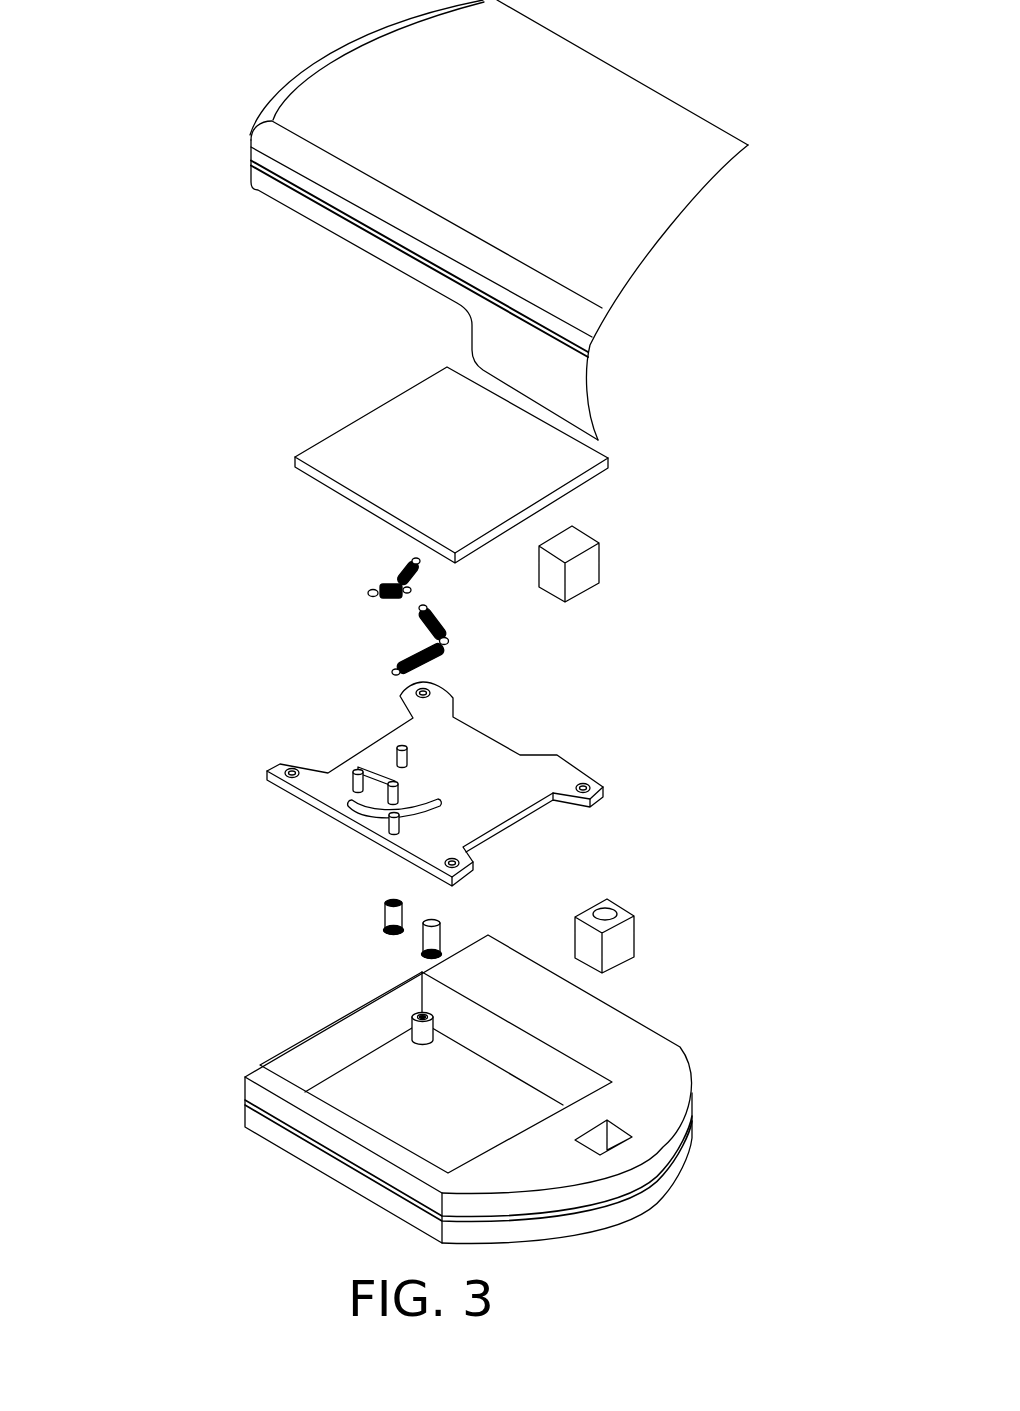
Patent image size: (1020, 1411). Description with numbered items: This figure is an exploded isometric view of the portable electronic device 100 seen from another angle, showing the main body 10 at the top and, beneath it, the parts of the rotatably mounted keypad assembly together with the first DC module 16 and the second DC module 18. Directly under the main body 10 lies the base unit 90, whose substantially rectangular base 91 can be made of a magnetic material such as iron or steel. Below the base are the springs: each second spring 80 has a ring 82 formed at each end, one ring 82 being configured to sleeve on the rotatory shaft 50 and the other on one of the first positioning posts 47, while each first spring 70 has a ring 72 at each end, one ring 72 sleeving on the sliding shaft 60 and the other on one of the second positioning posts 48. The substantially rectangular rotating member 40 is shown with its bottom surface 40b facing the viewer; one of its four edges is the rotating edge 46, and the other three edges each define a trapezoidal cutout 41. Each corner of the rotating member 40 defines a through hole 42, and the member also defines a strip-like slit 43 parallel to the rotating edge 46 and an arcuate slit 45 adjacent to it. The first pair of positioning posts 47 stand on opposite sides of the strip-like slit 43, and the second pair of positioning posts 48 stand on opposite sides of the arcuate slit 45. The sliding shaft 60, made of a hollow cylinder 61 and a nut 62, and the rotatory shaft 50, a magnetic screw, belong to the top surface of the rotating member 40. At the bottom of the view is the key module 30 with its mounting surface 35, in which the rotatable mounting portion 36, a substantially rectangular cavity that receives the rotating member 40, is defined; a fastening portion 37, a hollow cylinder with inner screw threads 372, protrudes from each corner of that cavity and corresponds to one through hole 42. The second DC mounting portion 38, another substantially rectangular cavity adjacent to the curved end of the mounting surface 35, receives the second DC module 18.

The portable electronic device 100 is at (248, 83).
The main body 10 is at (284, 190).
The base unit 90 is at (277, 452).
The base 91 is at (536, 478).
The first DC module 16 is at (590, 572).
The second spring 80 is at (392, 573).
The ring 82 is at (366, 591).
The first spring 70 is at (412, 639).
The ring 72 is at (448, 641).
The rotating member 40 is at (250, 768).
The trapezoidal cutout 41 is at (488, 732).
The bottom surface 40b is at (493, 768).
The through hole 42 is at (292, 765).
The strip-like slit 43 is at (373, 768).
The arcuate slit 45 is at (360, 808).
The rotating edge 46 is at (300, 800).
The first pair of positioning posts 47 is at (402, 745).
The second pair of positioning posts 48 is at (387, 795).
The sliding shaft 60 is at (383, 913).
The hollow cylinder 61 is at (397, 915).
The nut 62 is at (390, 933).
The rotatory shaft 50 is at (433, 942).
The second DC module 18 is at (620, 938).
The key module 30 is at (233, 1061).
The mounting surface 35 is at (653, 1053).
The rotatable mounting portion 36 is at (395, 1107).
The fastening portion 37 is at (422, 1033).
The inner screw threads 372 is at (420, 1016).
The second DC mounting portion 38 is at (618, 1140).